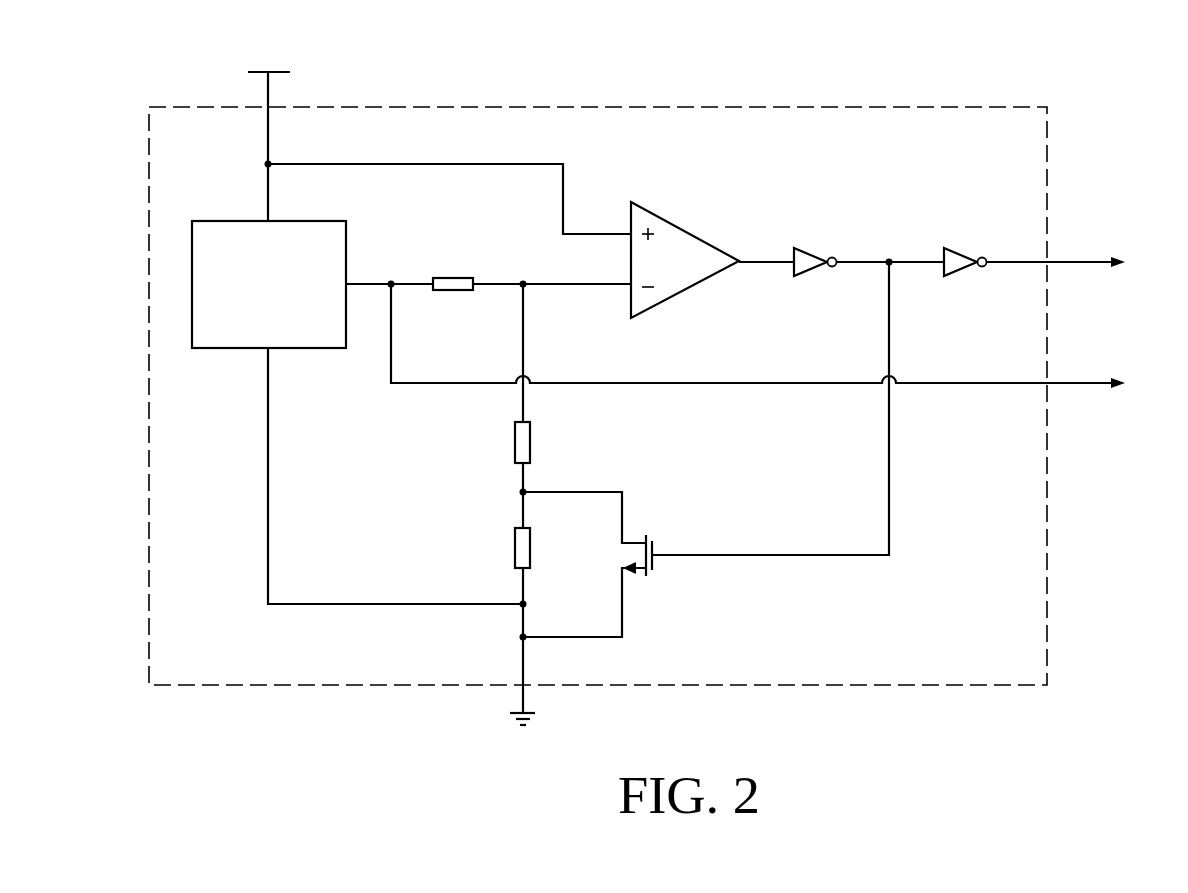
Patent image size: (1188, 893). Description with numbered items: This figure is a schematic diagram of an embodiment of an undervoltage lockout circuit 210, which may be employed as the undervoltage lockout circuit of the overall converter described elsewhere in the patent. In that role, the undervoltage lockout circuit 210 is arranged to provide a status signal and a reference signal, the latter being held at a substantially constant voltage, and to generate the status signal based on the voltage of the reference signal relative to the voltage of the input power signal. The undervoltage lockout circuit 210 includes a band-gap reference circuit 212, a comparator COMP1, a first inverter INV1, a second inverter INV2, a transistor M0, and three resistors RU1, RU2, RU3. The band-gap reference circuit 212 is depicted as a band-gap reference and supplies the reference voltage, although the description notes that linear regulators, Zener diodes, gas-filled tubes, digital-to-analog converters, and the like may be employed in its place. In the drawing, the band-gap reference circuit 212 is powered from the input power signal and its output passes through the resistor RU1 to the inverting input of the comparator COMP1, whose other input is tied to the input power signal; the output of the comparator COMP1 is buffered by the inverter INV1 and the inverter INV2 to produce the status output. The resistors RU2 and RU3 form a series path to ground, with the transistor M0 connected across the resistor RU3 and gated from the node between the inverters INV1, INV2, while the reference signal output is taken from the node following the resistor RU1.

The UVLO circuit 210 is at (992, 83).
The band-gap reference circuit 212 is at (288, 337).
The resistor RU1 is at (454, 299).
The resistor RU2 is at (547, 442).
The resistor RU3 is at (547, 548).
The comparator COMP1 is at (678, 274).
The inverter INV1 is at (813, 277).
The inverter INV2 is at (963, 276).
The transistor M0 is at (655, 563).